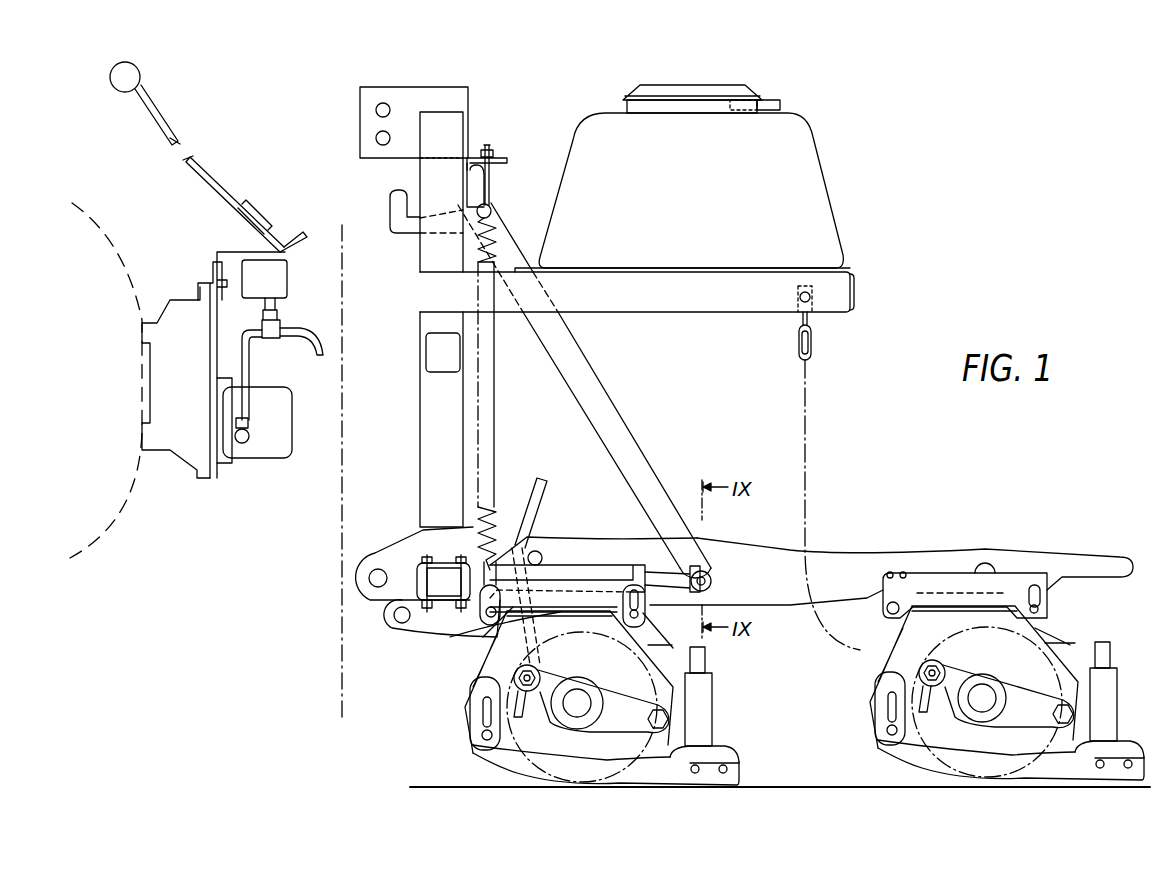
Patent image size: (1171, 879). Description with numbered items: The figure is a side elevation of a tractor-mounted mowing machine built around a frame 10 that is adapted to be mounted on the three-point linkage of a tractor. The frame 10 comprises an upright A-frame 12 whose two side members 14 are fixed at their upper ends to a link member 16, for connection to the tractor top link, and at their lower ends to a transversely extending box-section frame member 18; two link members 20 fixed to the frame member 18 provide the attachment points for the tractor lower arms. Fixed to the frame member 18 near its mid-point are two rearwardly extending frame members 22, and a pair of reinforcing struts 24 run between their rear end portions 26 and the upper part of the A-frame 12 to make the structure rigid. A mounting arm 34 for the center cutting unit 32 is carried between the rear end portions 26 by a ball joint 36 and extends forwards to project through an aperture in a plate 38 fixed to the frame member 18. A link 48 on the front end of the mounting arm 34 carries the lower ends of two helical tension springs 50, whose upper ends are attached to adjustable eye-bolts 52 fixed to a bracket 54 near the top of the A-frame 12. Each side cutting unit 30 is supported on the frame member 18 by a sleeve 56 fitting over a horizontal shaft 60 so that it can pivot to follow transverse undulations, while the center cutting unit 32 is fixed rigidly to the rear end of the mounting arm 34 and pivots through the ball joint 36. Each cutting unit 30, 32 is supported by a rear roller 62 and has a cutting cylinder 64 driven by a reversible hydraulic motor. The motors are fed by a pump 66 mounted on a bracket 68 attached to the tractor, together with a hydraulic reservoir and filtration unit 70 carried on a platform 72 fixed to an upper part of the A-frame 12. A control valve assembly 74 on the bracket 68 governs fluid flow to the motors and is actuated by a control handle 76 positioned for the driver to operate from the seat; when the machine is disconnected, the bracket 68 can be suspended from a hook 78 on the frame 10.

The frame 10 is at (422, 466).
The A-frame 12 is at (420, 250).
The side members 14 is at (422, 408).
The link member 16 is at (400, 95).
The box-section frame member 18 is at (440, 550).
The link members 20 is at (360, 590).
The rearwardly extending frame members 22 is at (555, 537).
The reinforcing struts 24 is at (630, 431).
The rear end portions 26 is at (712, 570).
The side cutting units 30 is at (482, 666).
The center cutting unit 32 is at (880, 660).
The mounting arm 34 is at (835, 562).
The ball joint 36 is at (712, 581).
The plate 38 is at (533, 480).
The link 48 is at (470, 630).
The helical tension springs 50 is at (492, 405).
The adjustable eye-bolts 52 is at (497, 190).
The bracket 54 is at (505, 158).
The sleeve 56 is at (583, 568).
The horizontal shaft 60 is at (657, 578).
The rear roller 62 is at (725, 755).
The cutting cylinder 64 is at (628, 612).
The pump 66 is at (272, 455).
The bracket 68 is at (217, 252).
The hydraulic reservoir and filtration unit 70 is at (708, 221).
The platform 72 is at (728, 315).
The control valve assembly 74 is at (287, 283).
The control handle 76 is at (170, 124).
The hook 78 is at (393, 206).